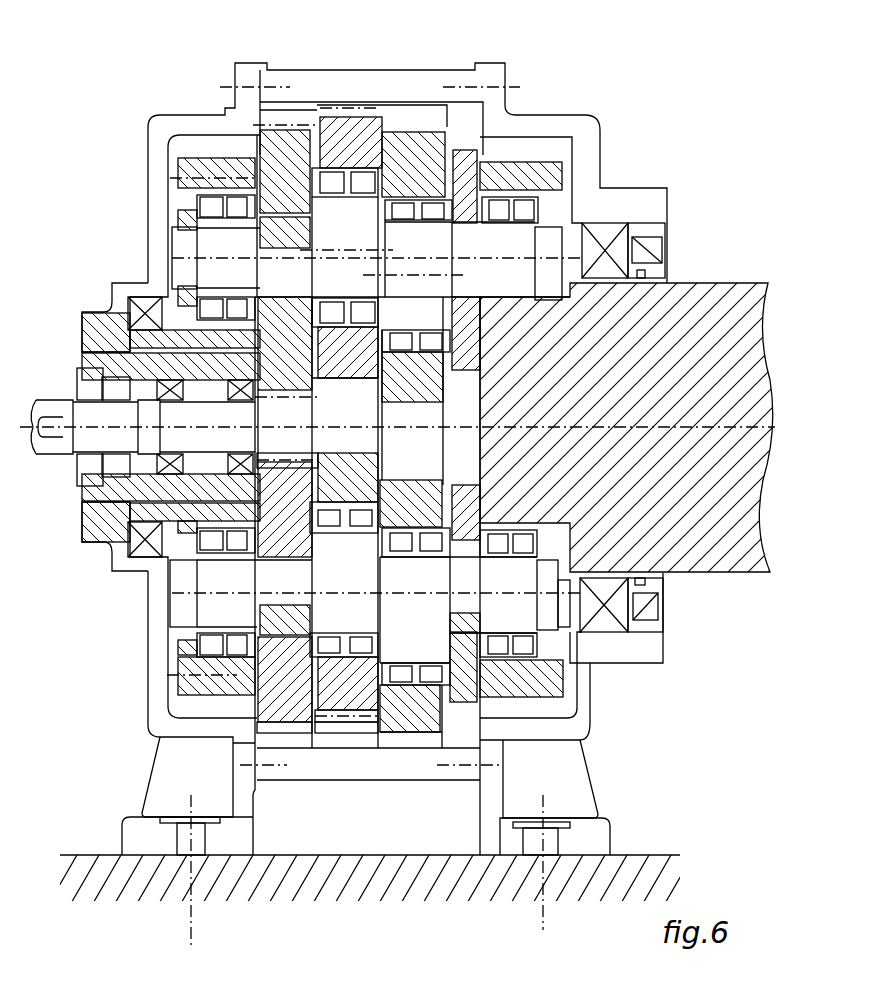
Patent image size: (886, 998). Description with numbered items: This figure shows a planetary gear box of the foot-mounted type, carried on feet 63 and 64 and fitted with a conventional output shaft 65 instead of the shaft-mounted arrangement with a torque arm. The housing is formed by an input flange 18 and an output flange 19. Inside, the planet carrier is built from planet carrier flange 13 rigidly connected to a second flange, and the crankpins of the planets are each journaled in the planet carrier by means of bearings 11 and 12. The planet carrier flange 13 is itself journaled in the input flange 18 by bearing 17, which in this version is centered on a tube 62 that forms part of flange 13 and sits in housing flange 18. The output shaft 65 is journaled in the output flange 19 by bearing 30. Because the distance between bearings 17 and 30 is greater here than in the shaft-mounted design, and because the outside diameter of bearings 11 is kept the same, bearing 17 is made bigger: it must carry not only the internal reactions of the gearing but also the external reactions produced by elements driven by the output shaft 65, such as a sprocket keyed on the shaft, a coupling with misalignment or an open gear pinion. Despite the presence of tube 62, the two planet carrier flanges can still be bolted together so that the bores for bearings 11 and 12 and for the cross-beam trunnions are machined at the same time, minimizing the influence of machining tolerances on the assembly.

The bearing 11 is at (225, 217).
The bearing 12 is at (517, 220).
The planet carrier flange 13 is at (228, 170).
The bearing 17 is at (148, 280).
The input flange 18 is at (158, 133).
The output flange 19 is at (540, 127).
The bearing 30 is at (612, 232).
The tube 62 is at (145, 303).
The foot 63 is at (148, 835).
The foot 64 is at (587, 833).
The output shaft 65 is at (717, 320).